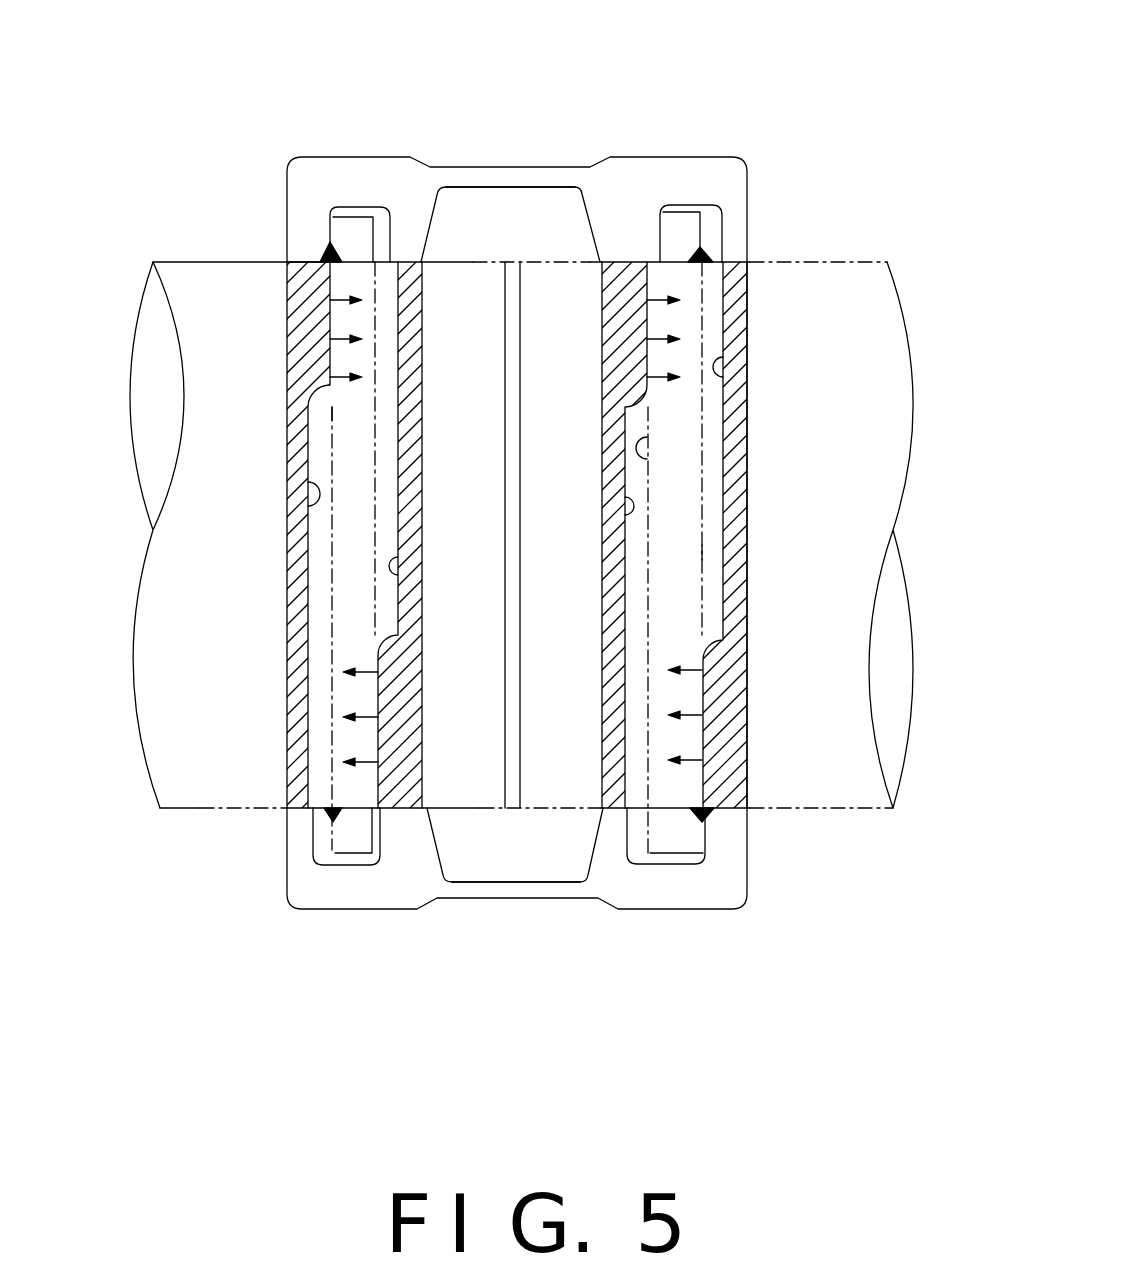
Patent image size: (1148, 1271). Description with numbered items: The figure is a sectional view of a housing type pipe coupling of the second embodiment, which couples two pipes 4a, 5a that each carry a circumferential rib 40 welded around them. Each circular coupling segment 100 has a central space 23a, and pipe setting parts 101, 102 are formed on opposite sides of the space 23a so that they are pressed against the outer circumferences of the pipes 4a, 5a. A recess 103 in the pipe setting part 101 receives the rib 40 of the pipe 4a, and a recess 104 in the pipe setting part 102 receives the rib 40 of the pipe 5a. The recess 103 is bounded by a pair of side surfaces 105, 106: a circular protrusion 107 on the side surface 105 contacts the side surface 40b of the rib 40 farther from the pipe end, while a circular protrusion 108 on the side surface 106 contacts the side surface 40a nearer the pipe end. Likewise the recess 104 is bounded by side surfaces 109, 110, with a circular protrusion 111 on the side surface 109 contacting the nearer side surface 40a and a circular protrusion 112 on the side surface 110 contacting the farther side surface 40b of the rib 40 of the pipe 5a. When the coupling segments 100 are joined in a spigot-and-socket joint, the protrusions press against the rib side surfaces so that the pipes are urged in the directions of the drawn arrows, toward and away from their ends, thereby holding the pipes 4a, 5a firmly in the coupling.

The circular coupling segment 100 is at (689, 150).
The pipe setting part 101 is at (302, 713).
The pipe setting part 102 is at (733, 660).
The recess 103 is at (387, 252).
The recess 104 is at (715, 225).
The side surface 105 is at (310, 508).
The side surface 106 is at (398, 562).
The circular protrusion 107 is at (320, 345).
The circular protrusion 108 is at (403, 767).
The side surface 109 is at (628, 510).
The side surface 110 is at (723, 366).
The circular protrusion 111 is at (638, 315).
The circular protrusion 112 is at (727, 788).
The space 23a is at (468, 222).
The circumferential rib 40 is at (350, 577).
The side surface of the circumferential rib 40a is at (387, 523).
The side surface of the circumferential rib 40b is at (330, 455).
The pipe 4a is at (255, 788).
The pipe 5a is at (792, 785).